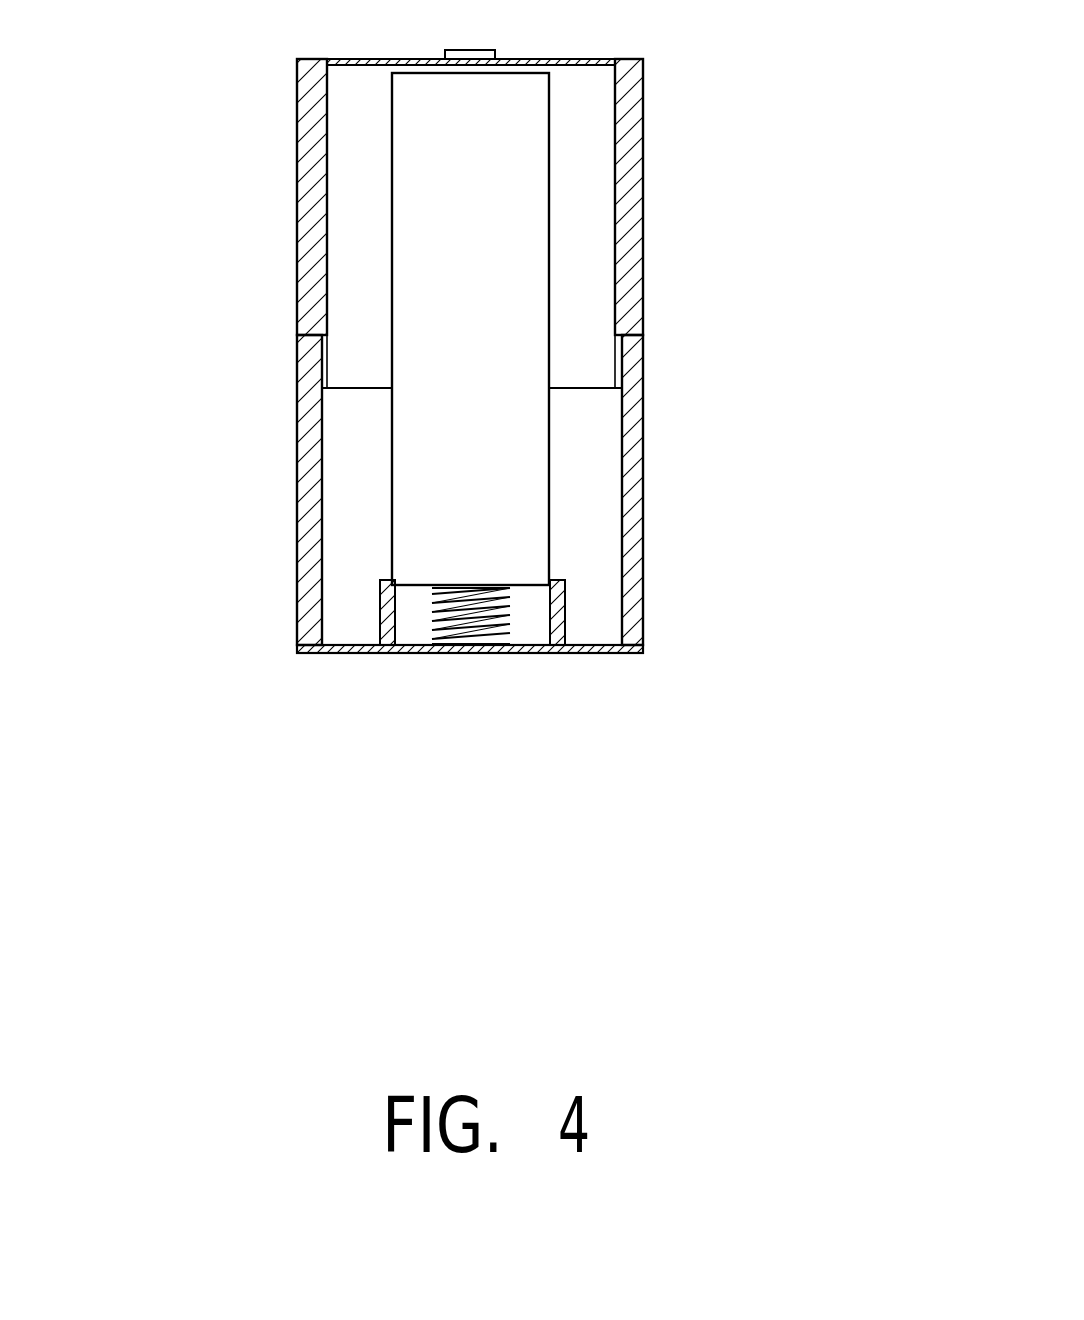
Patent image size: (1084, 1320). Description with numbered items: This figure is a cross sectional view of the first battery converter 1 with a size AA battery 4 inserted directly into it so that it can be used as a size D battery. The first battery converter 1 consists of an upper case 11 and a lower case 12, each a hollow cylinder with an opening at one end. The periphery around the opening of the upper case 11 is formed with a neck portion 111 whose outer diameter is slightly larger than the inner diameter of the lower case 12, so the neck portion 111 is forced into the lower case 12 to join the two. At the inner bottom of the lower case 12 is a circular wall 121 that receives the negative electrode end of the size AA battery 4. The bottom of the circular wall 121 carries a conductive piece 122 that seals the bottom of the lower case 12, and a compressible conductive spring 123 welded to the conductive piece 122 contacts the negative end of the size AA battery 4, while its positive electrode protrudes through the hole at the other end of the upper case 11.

The first battery converter 1 is at (505, 417).
The size AA battery 4 is at (431, 289).
The upper case 11 is at (632, 283).
The neck portion 111 is at (620, 379).
The lower case 12 is at (630, 513).
The circular wall 121 is at (563, 633).
The conductive piece 122 is at (520, 652).
The conductive spring 123 is at (460, 620).